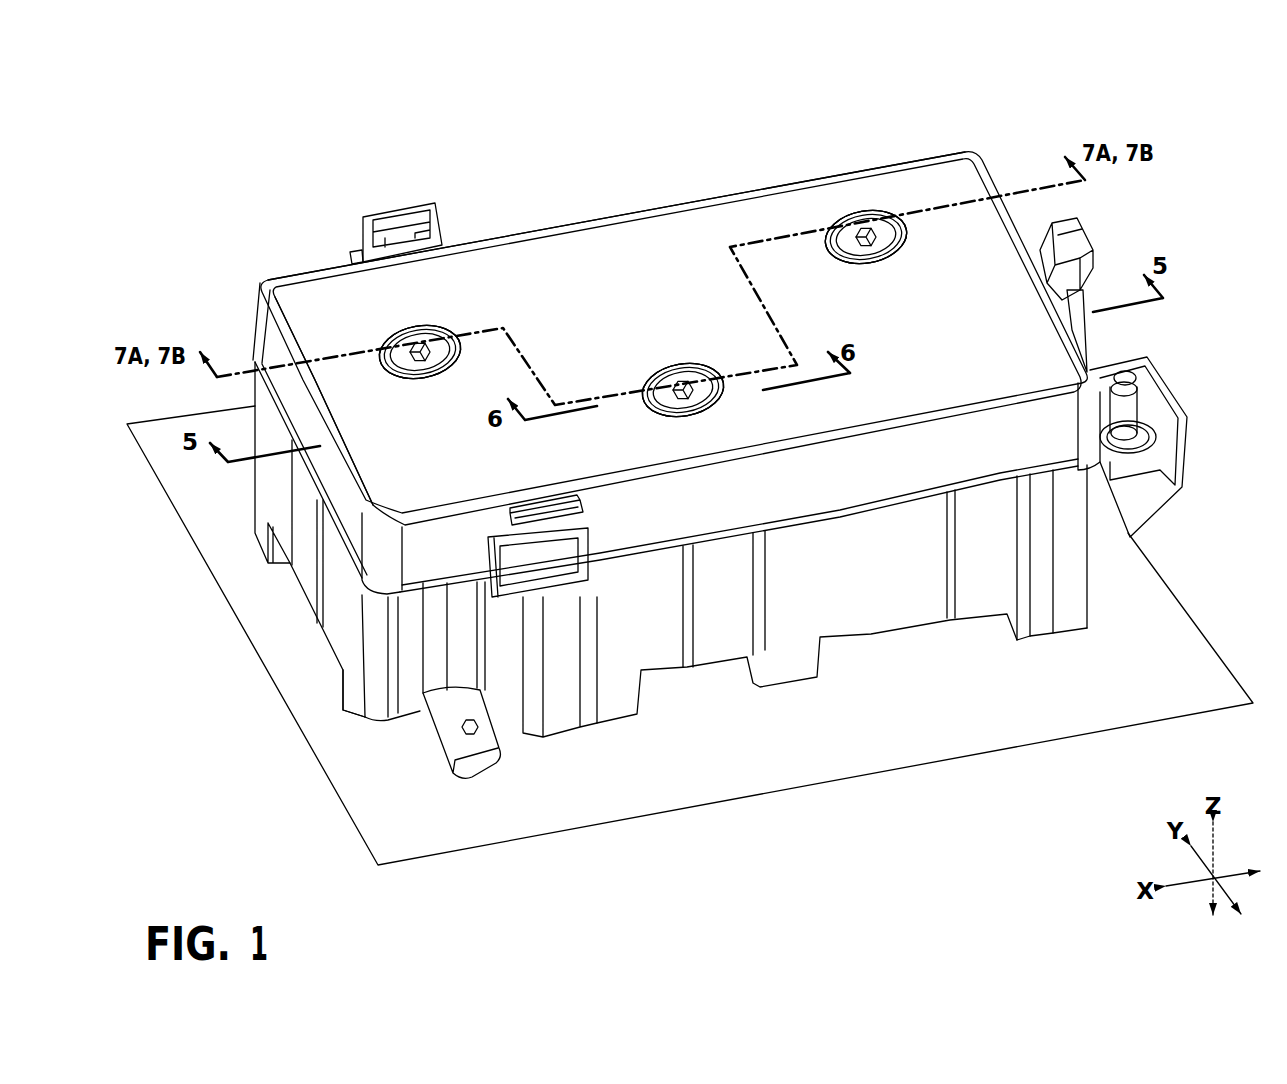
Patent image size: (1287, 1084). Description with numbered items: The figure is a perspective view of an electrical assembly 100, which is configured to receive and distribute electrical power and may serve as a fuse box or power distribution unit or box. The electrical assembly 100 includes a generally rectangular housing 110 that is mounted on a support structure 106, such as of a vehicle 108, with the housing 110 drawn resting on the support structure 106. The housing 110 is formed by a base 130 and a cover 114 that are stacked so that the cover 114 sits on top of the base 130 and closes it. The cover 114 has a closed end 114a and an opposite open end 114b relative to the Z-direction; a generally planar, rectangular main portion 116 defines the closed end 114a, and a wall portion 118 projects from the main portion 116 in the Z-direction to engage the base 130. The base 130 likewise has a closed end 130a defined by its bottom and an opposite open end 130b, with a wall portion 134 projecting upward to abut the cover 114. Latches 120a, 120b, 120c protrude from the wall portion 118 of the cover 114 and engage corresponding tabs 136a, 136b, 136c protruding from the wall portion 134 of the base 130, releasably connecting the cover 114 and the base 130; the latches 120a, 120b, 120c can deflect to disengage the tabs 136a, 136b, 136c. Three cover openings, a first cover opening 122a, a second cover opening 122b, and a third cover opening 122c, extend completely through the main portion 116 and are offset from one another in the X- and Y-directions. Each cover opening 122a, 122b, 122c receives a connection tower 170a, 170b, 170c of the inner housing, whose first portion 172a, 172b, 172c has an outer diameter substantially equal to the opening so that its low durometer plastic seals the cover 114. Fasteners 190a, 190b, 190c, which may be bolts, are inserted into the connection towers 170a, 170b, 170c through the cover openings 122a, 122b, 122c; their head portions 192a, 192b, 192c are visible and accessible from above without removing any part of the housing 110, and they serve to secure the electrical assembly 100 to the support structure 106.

The electrical assembly 100 is at (945, 135).
The support structure 106 is at (1170, 657).
The vehicle 108 is at (1196, 128).
The housing 110 is at (262, 296).
The cover 114 is at (583, 222).
The closed end 114a is at (288, 272).
The open end 114b is at (245, 360).
The main portion 116 is at (653, 247).
The wall portion 118 is at (347, 517).
The latch 120a is at (407, 208).
The latch 120b is at (583, 505).
The latch 120c is at (1087, 240).
The first cover opening 122a is at (687, 420).
The second cover opening 122b is at (387, 330).
The third cover opening 122c is at (823, 222).
The base 130 is at (871, 631).
The closed end 130a is at (353, 701).
The open end 130b is at (403, 603).
The wall portion 134 is at (343, 647).
The tab 136a is at (353, 257).
The tab 136b is at (533, 570).
The tab 136c is at (1075, 328).
The connection tower 170a is at (722, 397).
The connection tower 170b is at (455, 335).
The connection tower 170c is at (907, 242).
The first portion 172a is at (772, 424).
The first portion 172b is at (473, 254).
The first portion 172c is at (940, 284).
The fastener 190a is at (680, 372).
The fastener 190b is at (422, 360).
The fastener 190c is at (867, 244).
The head portion 192a is at (657, 400).
The head portion 192b is at (438, 357).
The head portion 192c is at (847, 243).